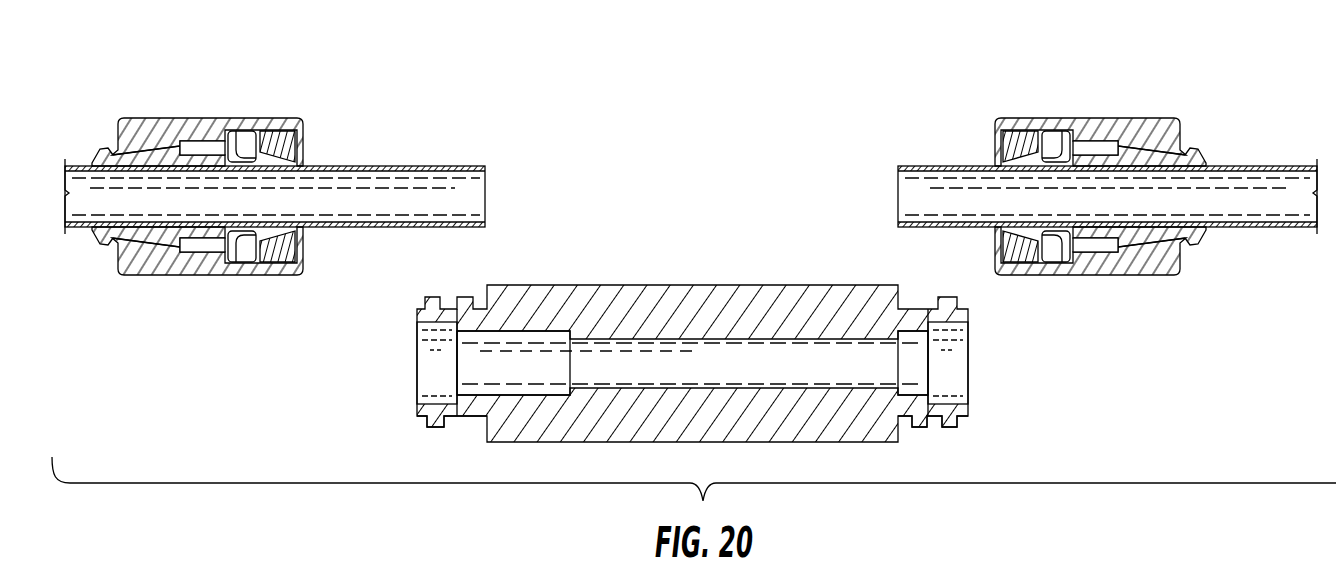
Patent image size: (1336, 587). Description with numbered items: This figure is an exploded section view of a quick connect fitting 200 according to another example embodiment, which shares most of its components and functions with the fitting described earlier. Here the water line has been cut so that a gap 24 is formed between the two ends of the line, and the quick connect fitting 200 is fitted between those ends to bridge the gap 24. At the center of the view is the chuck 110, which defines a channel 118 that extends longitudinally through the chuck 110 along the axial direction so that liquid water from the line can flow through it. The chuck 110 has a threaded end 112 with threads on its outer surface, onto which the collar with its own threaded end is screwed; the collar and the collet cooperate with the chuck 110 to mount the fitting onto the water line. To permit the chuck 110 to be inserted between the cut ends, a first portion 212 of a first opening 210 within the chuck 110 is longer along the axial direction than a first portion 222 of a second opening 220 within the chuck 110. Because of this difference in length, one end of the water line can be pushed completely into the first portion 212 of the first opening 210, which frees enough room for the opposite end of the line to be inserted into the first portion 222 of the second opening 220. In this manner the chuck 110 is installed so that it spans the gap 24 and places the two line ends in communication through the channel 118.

The gap 24 is at (680, 162).
The chuck 110 is at (840, 442).
The threaded end 112 is at (430, 428).
The channel 118 is at (697, 366).
The quick connect fitting 200 is at (1074, 179).
The first opening 210 is at (410, 370).
The first portion of first opening 212 is at (517, 328).
The second opening 220 is at (975, 371).
The first portion of second opening 222 is at (912, 328).